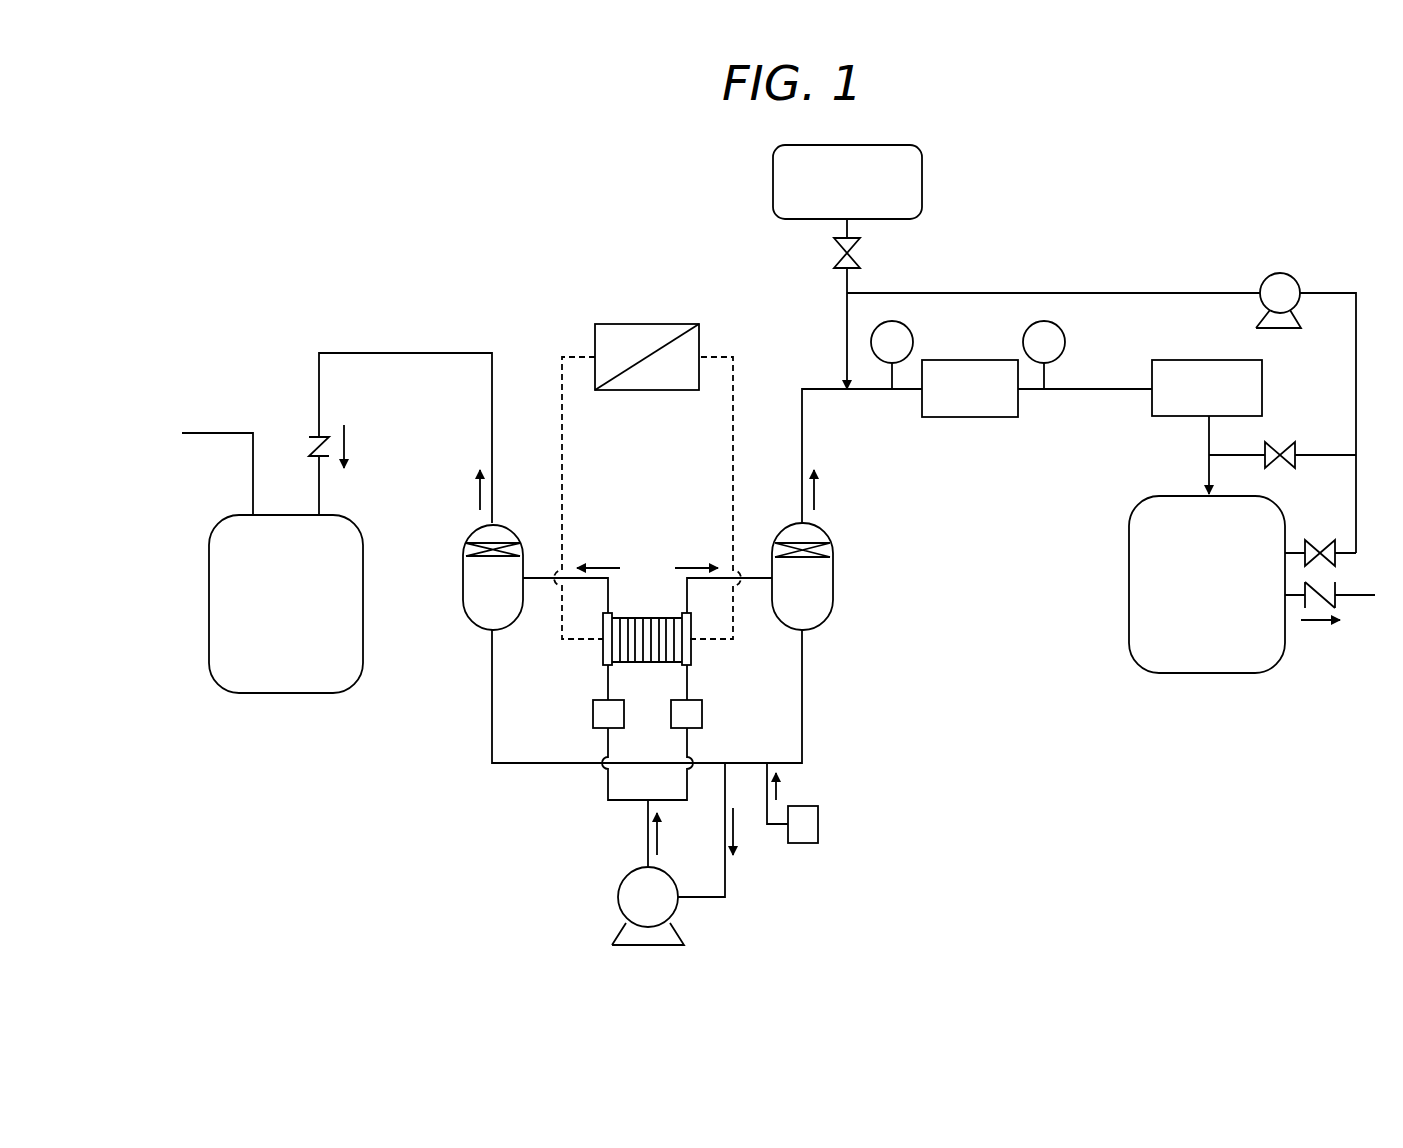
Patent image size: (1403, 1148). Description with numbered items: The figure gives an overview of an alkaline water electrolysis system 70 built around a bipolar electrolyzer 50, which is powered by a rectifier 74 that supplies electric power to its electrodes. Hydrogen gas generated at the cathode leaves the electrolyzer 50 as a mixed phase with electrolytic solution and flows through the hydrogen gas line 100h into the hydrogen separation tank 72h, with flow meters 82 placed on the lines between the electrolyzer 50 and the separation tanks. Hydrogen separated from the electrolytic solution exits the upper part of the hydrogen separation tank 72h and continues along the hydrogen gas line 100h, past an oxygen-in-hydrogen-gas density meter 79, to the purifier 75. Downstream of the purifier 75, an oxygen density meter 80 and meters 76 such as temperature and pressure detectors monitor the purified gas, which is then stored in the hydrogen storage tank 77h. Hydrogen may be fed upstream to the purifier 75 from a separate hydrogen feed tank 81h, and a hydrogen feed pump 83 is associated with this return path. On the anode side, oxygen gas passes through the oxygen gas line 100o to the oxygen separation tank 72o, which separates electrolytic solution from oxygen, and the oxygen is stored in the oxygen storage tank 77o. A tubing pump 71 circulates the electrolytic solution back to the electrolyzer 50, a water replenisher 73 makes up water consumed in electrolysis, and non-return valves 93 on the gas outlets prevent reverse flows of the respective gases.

The alkaline water electrolysis system 70 is at (442, 252).
The tubing pump 71 is at (618, 897).
The oxygen separation tank 72o is at (475, 596).
The hydrogen separation tank 72h is at (785, 596).
The water replenisher 73 is at (818, 825).
The rectifier 74 is at (647, 324).
The purifier 75 is at (957, 401).
The meters 76 is at (1194, 399).
The oxygen storage tank 77o is at (265, 611).
The hydrogen storage tank 77h is at (1189, 593).
The oxygen-in-hydrogen-gas density meter 79 is at (907, 330).
The oxygen density meter 80 is at (1032, 332).
The hydrogen feed tank 81h is at (829, 194).
The flow meter 82 is at (593, 715).
The hydrogen feed pump 83 is at (1280, 273).
The non-return valve 93 is at (306, 453).
The bipolar electrolyzer 50 is at (647, 613).
The oxygen gas line 100o is at (319, 386).
The hydrogen gas line 100h is at (802, 435).